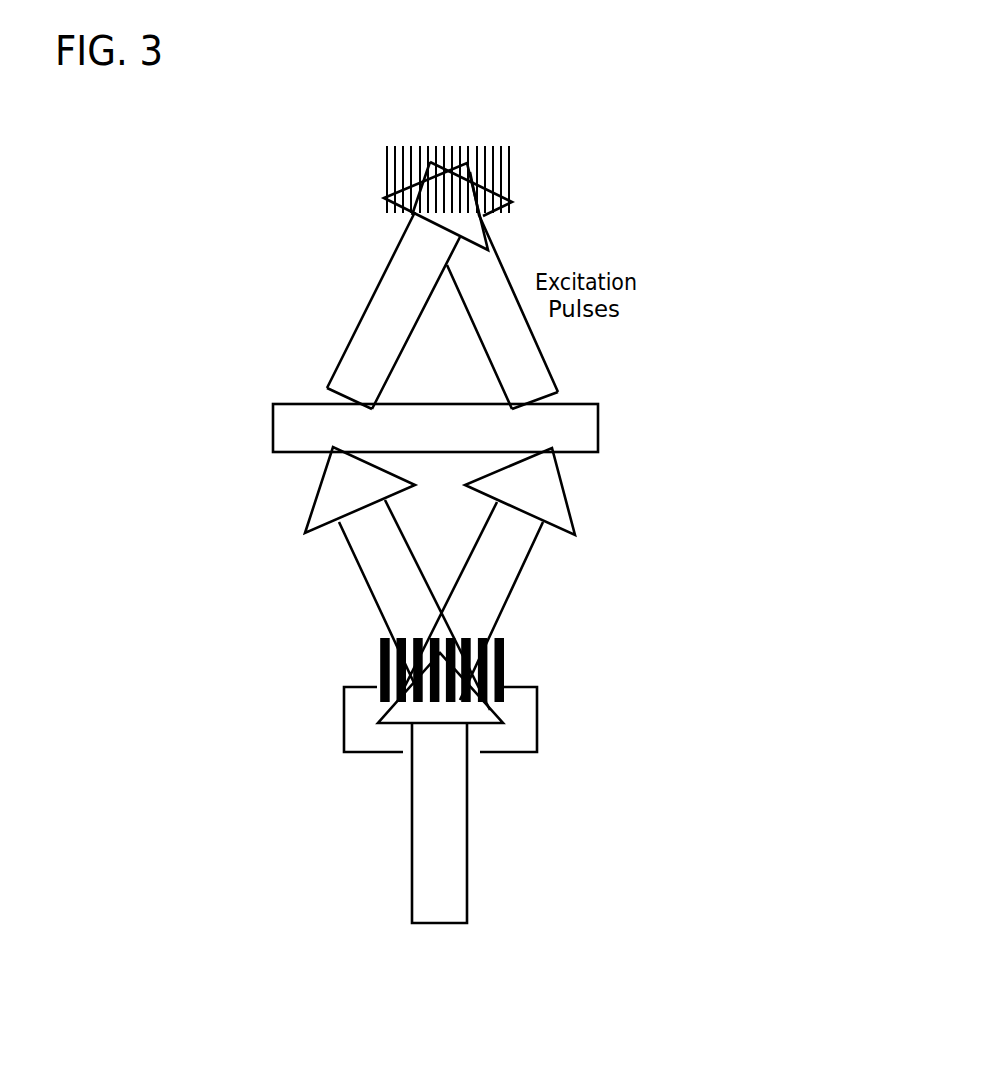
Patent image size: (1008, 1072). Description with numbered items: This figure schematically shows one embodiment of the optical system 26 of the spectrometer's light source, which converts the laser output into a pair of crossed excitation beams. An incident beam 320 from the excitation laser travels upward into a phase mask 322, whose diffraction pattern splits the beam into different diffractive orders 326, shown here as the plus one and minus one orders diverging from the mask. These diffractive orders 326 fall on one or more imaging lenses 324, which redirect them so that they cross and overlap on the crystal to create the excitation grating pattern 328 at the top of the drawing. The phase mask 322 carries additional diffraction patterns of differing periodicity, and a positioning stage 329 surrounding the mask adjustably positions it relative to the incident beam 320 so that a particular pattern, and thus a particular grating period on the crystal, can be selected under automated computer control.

The optical system 26 is at (750, 245).
The incident beam 320 is at (445, 832).
The phase mask 322 is at (378, 672).
The imaging lenses 324 is at (598, 428).
The diffractive orders 326 is at (430, 527).
The grating pattern 328 is at (378, 174).
The positioning stage 329 is at (537, 718).